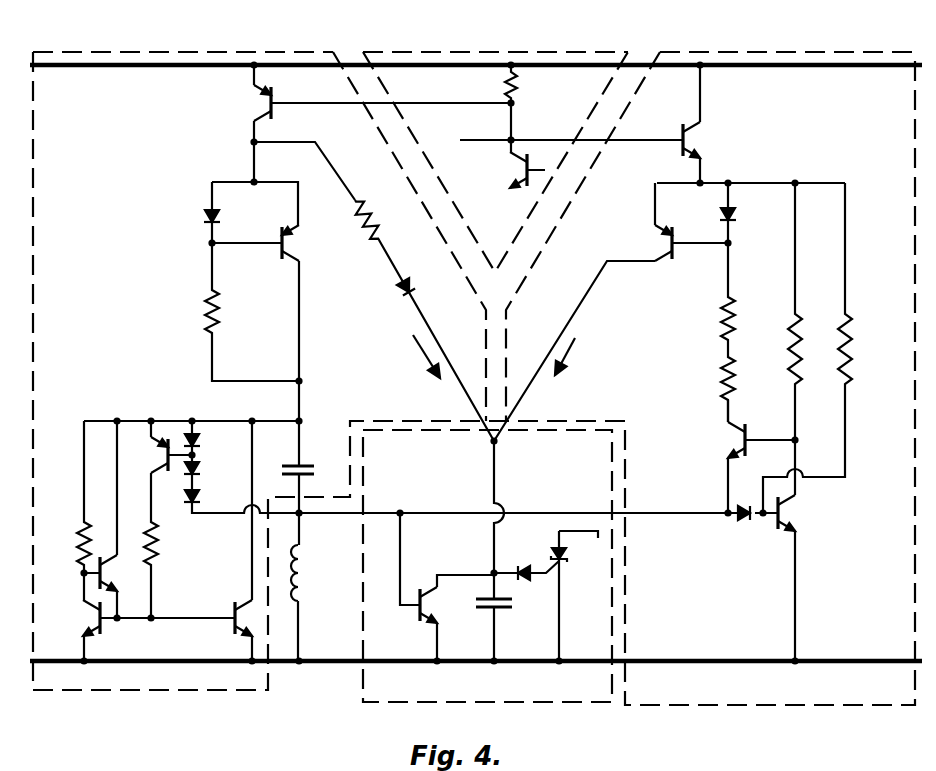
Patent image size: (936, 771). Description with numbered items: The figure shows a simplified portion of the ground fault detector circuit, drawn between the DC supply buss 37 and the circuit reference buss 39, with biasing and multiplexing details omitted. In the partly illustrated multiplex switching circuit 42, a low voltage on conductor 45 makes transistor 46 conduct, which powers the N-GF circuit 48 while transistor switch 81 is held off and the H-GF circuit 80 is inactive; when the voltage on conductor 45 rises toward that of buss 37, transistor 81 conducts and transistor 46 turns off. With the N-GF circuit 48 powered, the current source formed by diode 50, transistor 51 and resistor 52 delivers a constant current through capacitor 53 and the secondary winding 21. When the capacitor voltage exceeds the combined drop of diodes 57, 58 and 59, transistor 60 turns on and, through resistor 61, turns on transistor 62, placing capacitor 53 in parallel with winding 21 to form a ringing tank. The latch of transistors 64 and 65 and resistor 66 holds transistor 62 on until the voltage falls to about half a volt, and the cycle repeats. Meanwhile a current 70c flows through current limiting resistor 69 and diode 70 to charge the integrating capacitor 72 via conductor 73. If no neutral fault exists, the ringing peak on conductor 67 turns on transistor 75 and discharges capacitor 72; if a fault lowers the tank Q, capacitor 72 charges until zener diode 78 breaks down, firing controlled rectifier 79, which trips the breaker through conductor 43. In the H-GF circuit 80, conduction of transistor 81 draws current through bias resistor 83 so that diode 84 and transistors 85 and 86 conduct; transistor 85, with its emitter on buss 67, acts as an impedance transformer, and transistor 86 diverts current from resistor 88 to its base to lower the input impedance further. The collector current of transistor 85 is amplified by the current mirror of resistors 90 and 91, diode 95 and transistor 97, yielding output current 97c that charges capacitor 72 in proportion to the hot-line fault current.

The secondary winding 21 is at (306, 578).
The DC supply buss 37 is at (536, 60).
The circuit reference buss 39 is at (518, 662).
The multiplex switching circuit 42 is at (420, 25).
The conductor 43 is at (590, 548).
The conductor 45 is at (496, 140).
The transistor 46 is at (265, 101).
The N-GF circuit 48 is at (148, 52).
The diode 50 is at (206, 214).
The transistor 51 is at (291, 236).
The resistor 52 is at (207, 314).
The capacitor 53 is at (302, 470).
The diode 57 is at (200, 442).
The diode 58 is at (200, 468).
The diode 59 is at (200, 496).
The transistor 60 is at (167, 460).
The resistor 61 is at (158, 528).
The transistor 62 is at (234, 630).
The transistor 64 is at (102, 575).
The transistor 65 is at (98, 618).
The resistor 66 is at (84, 546).
The conductor 67 is at (450, 495).
The current limiting resistor 69 is at (374, 291).
The diode 70 is at (400, 301).
The current 70c is at (397, 358).
The integrating capacitor 72 is at (512, 605).
The conductor 73 is at (498, 490).
The transistor 75 is at (447, 587).
The zener diode 78 is at (520, 570).
The controlled rectifier 79 is at (582, 596).
The H-GF circuit 80 is at (810, 32).
The transistor switch 81 is at (690, 140).
The bias resistor 83 is at (845, 334).
The diode 84 is at (744, 522).
The transistor 85 is at (742, 446).
The transistor 86 is at (786, 517).
The resistor 88 is at (796, 332).
The resistor 90 is at (736, 386).
The resistor 91 is at (749, 299).
The diode 95 is at (722, 216).
The transistor 97 is at (660, 246).
The output current 97c is at (596, 360).